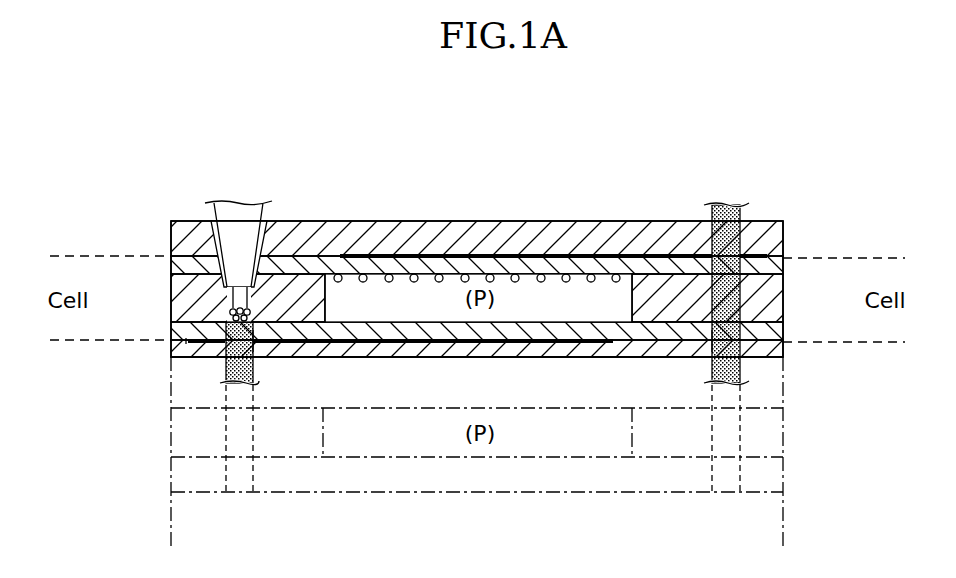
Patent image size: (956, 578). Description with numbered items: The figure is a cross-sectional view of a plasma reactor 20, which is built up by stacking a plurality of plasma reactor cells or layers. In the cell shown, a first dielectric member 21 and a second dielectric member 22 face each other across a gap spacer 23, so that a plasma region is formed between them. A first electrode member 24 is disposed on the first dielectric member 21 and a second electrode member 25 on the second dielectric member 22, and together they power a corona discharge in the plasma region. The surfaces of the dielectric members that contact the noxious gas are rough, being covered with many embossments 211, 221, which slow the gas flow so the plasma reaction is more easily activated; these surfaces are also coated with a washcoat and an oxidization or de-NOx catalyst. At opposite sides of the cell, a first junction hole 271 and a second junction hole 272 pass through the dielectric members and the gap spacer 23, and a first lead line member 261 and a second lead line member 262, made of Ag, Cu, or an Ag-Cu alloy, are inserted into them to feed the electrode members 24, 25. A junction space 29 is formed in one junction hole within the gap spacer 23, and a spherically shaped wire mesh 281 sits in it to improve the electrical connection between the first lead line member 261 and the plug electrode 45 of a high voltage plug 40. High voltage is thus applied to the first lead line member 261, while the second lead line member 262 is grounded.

The plasma reactor 20 is at (644, 175).
The first dielectric member 21 is at (778, 331).
The second dielectric member 22 is at (776, 245).
The gap spacer 23 is at (187, 281).
The first electrode member 24 is at (502, 342).
The second electrode member 25 is at (572, 268).
The junction space 29 is at (187, 340).
The high voltage plug 40 is at (238, 192).
The plug electrode 45 is at (243, 300).
The embossments 211 is at (387, 343).
The embossments 221 is at (417, 275).
The first lead line member 261 is at (229, 367).
The second lead line member 262 is at (726, 210).
The first junction hole 271 is at (254, 334).
The second junction hole 272 is at (705, 350).
The wire mesh 281 is at (230, 312).